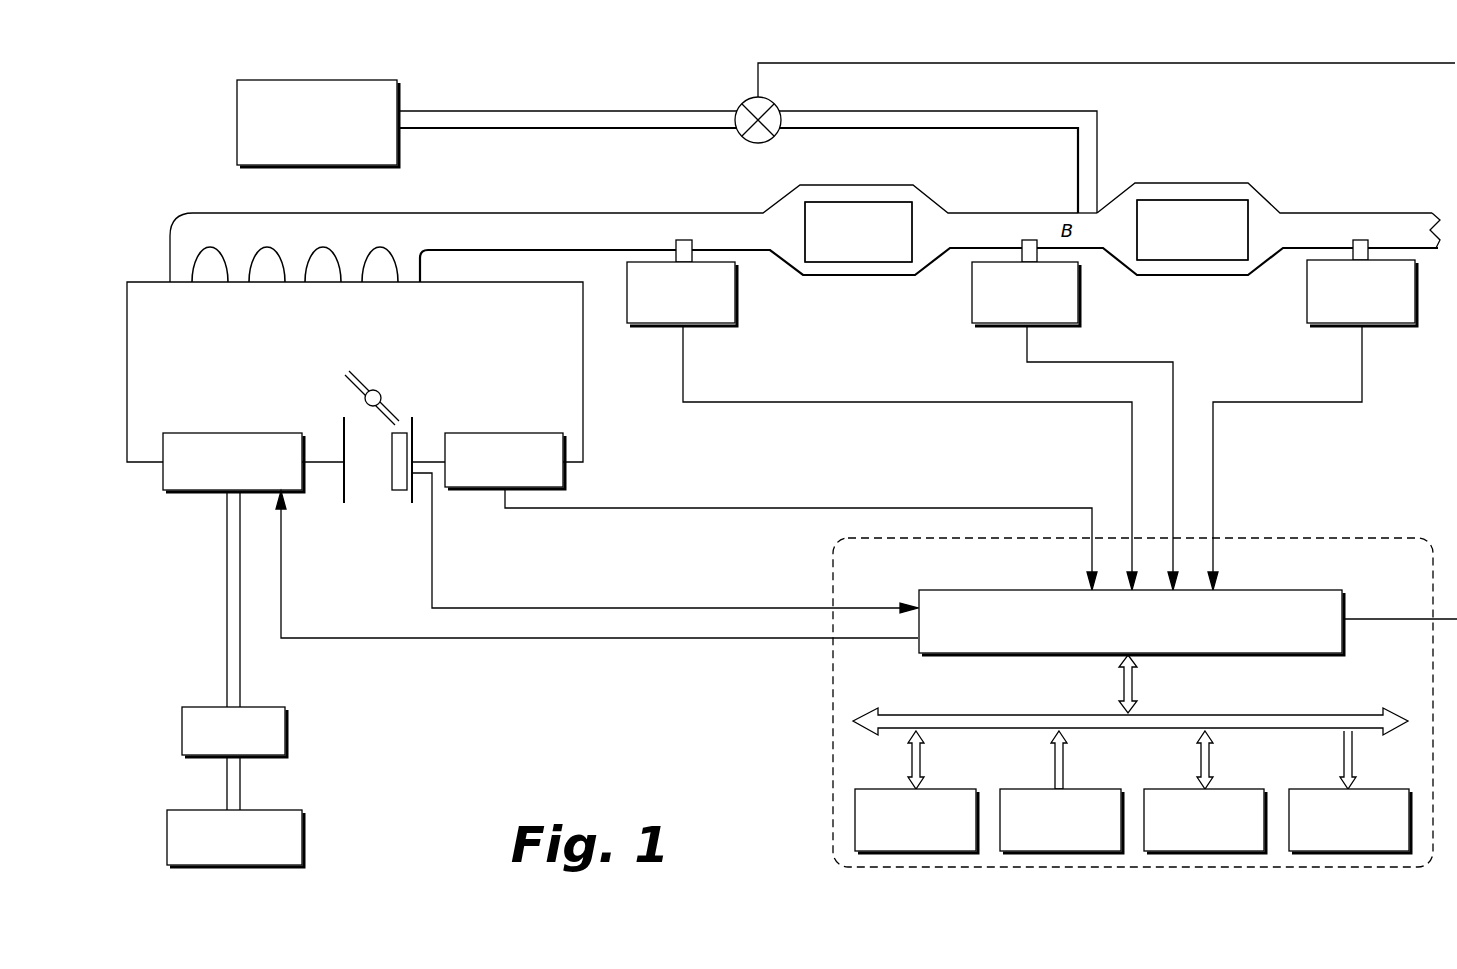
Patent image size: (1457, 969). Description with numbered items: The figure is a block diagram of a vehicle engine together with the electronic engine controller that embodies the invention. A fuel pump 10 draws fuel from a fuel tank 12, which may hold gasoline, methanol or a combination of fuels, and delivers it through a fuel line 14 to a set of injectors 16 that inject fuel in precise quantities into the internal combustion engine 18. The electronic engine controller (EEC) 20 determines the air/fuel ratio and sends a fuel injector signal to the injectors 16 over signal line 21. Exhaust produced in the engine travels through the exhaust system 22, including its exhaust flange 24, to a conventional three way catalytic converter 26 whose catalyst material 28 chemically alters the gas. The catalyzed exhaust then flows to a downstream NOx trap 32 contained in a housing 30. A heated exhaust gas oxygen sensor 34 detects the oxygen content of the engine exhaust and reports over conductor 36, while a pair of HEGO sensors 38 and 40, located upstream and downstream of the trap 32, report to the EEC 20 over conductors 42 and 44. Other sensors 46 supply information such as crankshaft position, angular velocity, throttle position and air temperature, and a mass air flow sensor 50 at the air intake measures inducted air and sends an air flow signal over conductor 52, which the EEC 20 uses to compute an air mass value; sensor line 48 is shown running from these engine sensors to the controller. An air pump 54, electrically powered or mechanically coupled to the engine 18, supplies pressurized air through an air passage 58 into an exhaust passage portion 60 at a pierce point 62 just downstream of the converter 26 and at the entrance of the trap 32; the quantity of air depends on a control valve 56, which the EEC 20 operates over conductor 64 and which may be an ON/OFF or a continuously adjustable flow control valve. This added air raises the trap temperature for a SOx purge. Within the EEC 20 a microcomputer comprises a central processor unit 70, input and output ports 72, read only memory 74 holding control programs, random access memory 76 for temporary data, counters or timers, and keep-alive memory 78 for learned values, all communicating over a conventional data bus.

The fuel pump 10 is at (287, 730).
The fuel tank 12 is at (304, 832).
The fuel line 14 is at (223, 585).
The fuel injectors 16 is at (180, 492).
The internal combustion engine 18 is at (583, 407).
The electronic engine controller (EEC) 20 is at (1270, 538).
The signal line 21 is at (368, 638).
The exhaust system 22 is at (536, 213).
The exhaust flange 24 is at (433, 213).
The three way catalytic converter 26 is at (943, 257).
The catalyst material 28 is at (847, 252).
The housing 30 is at (1167, 273).
The NOx trap 32 is at (1227, 212).
The heated exhaust gas oxygen (HEGO) sensor 34 is at (737, 317).
The conductor 36 is at (1130, 448).
The upstream HEGO sensor 38 is at (983, 332).
The downstream HEGO sensor 40 is at (1335, 328).
The conductor 42 is at (1033, 363).
The conductor 44 is at (1362, 365).
The sensors 46 is at (478, 432).
The sensor signal line 48 is at (683, 508).
The mass air flow sensor 50 is at (400, 492).
The conductor 52 is at (660, 608).
The air pump 54 is at (237, 118).
The control valve 56 is at (746, 102).
The air passage 58 is at (920, 120).
The exhaust passage portion 60 is at (1004, 217).
The pierce point 62 is at (1087, 207).
The conductor 64 is at (1253, 63).
The central processor unit (CPU) 70 is at (895, 853).
The input and output (I/O) ports 72 is at (1344, 640).
The read only memory (ROM) 74 is at (1032, 853).
The random access memory (RAM) 76 is at (1175, 853).
The keep-alive memory (KAM) 78 is at (1320, 853).